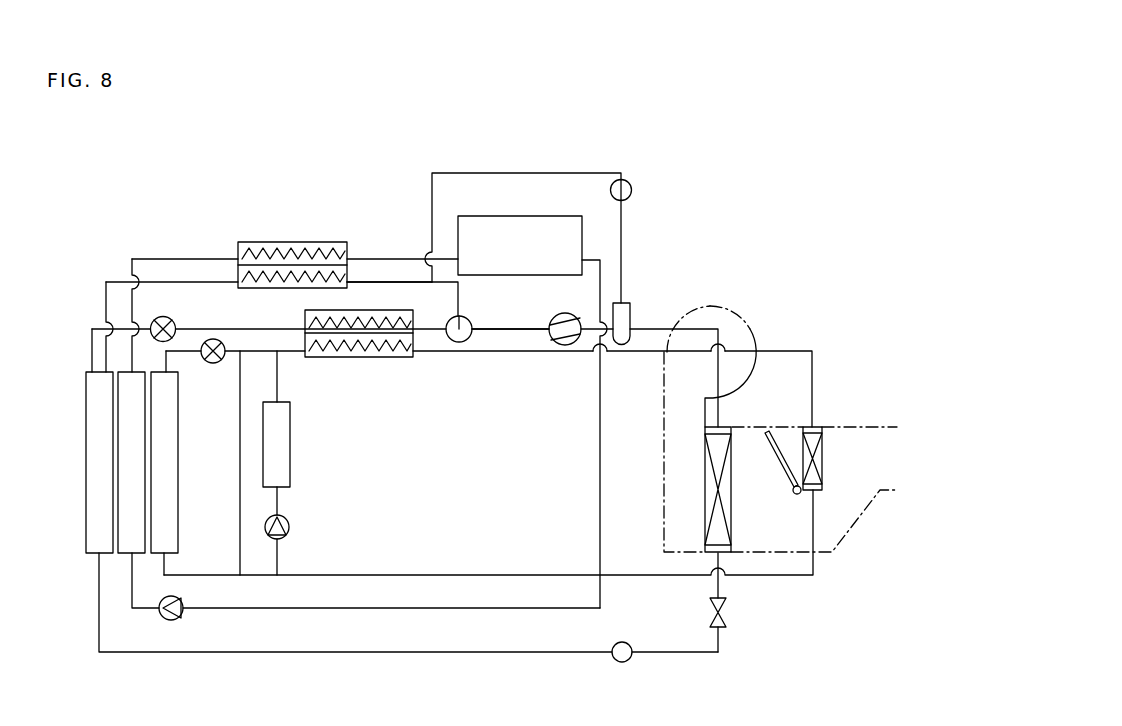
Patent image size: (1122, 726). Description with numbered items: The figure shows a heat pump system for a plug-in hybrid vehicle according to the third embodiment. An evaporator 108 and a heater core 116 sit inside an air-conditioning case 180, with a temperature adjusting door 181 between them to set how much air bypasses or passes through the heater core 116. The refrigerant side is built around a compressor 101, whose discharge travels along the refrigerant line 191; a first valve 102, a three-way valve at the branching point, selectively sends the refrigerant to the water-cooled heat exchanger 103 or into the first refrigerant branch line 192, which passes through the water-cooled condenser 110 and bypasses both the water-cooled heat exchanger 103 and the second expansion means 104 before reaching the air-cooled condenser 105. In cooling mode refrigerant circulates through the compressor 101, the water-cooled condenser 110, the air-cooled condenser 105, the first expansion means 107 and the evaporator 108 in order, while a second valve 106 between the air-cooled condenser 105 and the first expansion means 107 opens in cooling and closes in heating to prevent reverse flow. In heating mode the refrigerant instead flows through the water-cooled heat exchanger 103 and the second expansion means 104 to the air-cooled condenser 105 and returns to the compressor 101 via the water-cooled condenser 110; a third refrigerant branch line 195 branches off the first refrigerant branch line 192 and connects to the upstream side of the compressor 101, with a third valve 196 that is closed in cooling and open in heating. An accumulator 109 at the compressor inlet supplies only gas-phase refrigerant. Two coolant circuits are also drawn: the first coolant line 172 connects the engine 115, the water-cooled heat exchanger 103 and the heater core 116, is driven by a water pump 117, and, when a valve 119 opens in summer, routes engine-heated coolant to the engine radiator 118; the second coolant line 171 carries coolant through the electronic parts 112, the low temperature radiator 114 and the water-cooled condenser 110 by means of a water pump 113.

The compressor 101 is at (563, 314).
The first valve 102 is at (461, 342).
The water-cooled heat exchanger 103 is at (358, 358).
The second expansion means 104 is at (170, 320).
The air-cooled condenser 105 is at (90, 555).
The second valve 106 is at (622, 662).
The first expansion means 107 is at (726, 620).
The evaporator 108 is at (732, 528).
The accumulator 109 is at (628, 305).
The water-cooled condenser 110 is at (295, 241).
The electronic parts 112 is at (590, 217).
The water pump 113 is at (176, 619).
The low temperature radiator 114 is at (123, 555).
The engine 115 is at (290, 462).
The heater core 116 is at (823, 461).
The water pump 117 is at (289, 522).
The engine radiator 118 is at (178, 462).
The valve 119 is at (211, 363).
The second coolant line 171 is at (601, 274).
The first coolant line 172 is at (380, 573).
The air-conditioning case 180 is at (858, 527).
The temperature adjusting door 181 is at (787, 458).
The refrigerant line 191 is at (534, 328).
The first refrigerant branch line 192 is at (392, 281).
The third refrigerant branch line 195 is at (527, 173).
The third valve 196 is at (633, 190).